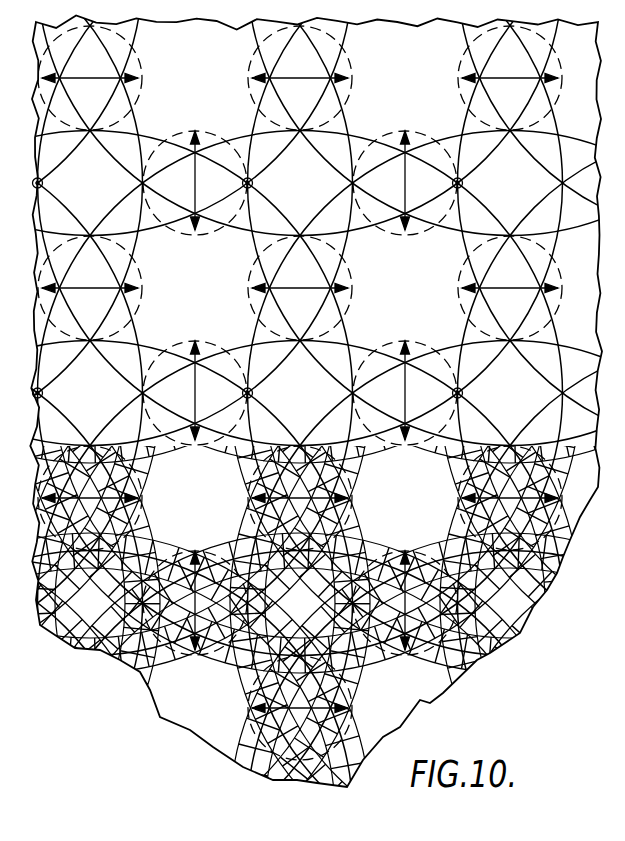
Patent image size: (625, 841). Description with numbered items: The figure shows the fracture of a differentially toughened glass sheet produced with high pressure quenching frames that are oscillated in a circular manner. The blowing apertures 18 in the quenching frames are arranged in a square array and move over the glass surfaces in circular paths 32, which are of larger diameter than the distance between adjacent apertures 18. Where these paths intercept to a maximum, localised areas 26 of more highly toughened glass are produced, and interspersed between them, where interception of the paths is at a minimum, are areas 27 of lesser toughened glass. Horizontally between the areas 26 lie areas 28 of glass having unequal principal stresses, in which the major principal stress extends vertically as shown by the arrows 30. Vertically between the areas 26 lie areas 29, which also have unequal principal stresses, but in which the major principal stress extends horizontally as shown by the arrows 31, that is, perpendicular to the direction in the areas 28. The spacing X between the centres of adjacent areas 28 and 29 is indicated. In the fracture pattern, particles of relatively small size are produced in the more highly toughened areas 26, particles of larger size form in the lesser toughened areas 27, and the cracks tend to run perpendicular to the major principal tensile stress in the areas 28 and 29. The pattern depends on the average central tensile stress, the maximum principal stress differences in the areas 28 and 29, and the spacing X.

The blowing apertures 18 is at (39, 189).
The localised areas of more highly toughened glass 26 is at (74, 197).
The areas of lesser toughened glass 27 is at (184, 88).
The areas of glass having unequal principal stresses 28 is at (160, 197).
The areas of glass having unequal principal stresses 29 is at (74, 69).
The arrows 30 is at (198, 181).
The arrows 31 is at (78, 82).
The circular paths 32 is at (357, 441).
The spacing X is at (252, 131).